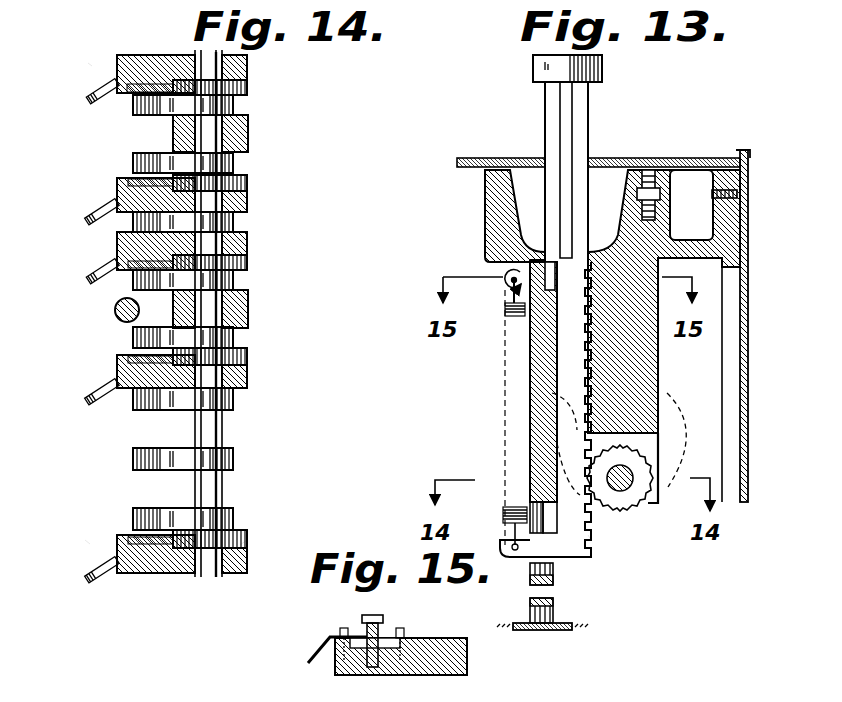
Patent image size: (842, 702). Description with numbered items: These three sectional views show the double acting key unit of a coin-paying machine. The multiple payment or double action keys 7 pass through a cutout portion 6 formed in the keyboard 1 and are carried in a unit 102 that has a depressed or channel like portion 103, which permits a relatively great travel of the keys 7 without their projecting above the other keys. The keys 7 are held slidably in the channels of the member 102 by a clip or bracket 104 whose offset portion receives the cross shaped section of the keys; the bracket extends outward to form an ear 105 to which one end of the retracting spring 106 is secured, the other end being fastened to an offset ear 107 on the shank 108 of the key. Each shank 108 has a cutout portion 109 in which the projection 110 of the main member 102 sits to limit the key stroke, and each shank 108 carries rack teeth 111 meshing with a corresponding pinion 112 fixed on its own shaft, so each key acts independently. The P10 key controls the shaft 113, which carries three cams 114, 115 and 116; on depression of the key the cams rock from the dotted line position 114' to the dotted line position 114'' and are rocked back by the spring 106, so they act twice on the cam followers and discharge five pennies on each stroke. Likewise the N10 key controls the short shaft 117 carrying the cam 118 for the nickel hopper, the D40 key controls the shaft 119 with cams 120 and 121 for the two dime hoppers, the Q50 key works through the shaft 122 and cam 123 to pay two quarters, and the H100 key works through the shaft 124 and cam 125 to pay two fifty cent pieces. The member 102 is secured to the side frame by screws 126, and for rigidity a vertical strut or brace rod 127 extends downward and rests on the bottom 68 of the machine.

In FIG. 13, the keyboard 1 is at (707, 158).
In FIG. 13, the cutout portion 6 is at (518, 157).
In FIG. 13, the keys 7 is at (531, 70).
In FIG. 13, the bottom 68 is at (542, 632).
In FIG. 14, the unit 102 is at (247, 294).
In FIG. 13, the unit 102 is at (487, 218).
In FIG. 15, the unit 102 is at (468, 652).
In FIG. 13, the depressed or channel like portion 103 is at (605, 185).
In FIG. 15, the clip or bracket 104 is at (387, 623).
In FIG. 13, the ear 105 is at (505, 272).
In FIG. 15, the ear 105 is at (318, 654).
In FIG. 13, the retracting spring 106 is at (503, 312).
In FIG. 14, the offset ear 107 is at (100, 62).
In FIG. 13, the offset ear 107 is at (512, 535).
In FIG. 14, the shank 108 is at (143, 88).
In FIG. 13, the shank 108 is at (556, 578).
In FIG. 15, the shank 108 is at (342, 656).
In FIG. 13, the cutout portion 109 is at (500, 386).
In FIG. 13, the projection 110 is at (562, 452).
In FIG. 13, the rack teeth 111 is at (566, 544).
In FIG. 14, the pinion 112 is at (250, 545).
In FIG. 13, the pinion 112 is at (623, 488).
In FIG. 14, the shaft 113 is at (212, 436).
In FIG. 13, the shaft 113 is at (592, 537).
In FIG. 14, the cam 114 is at (130, 511).
In FIG. 13, the dotted line position of cam 114' is at (473, 411).
In FIG. 13, the dotted line position of cam 114'' is at (738, 440).
In FIG. 14, the cam 115 is at (133, 460).
In FIG. 14, the cam 116 is at (133, 400).
In FIG. 14, the short shaft 117 is at (248, 306).
In FIG. 14, the cam 118 is at (150, 334).
In FIG. 14, the shaft 119 is at (248, 242).
In FIG. 14, the cam 120 is at (133, 283).
In FIG. 14, the cam 121 is at (133, 221).
In FIG. 14, the shaft 122 is at (248, 147).
In FIG. 14, the cam 123 is at (133, 163).
In FIG. 14, the shaft 124 is at (250, 123).
In FIG. 14, the cam 125 is at (133, 105).
In FIG. 13, the screws 126 is at (714, 194).
In FIG. 14, the vertical strut or brace rod 127 is at (113, 311).
In FIG. 13, the vertical strut or brace rod 127 is at (556, 614).